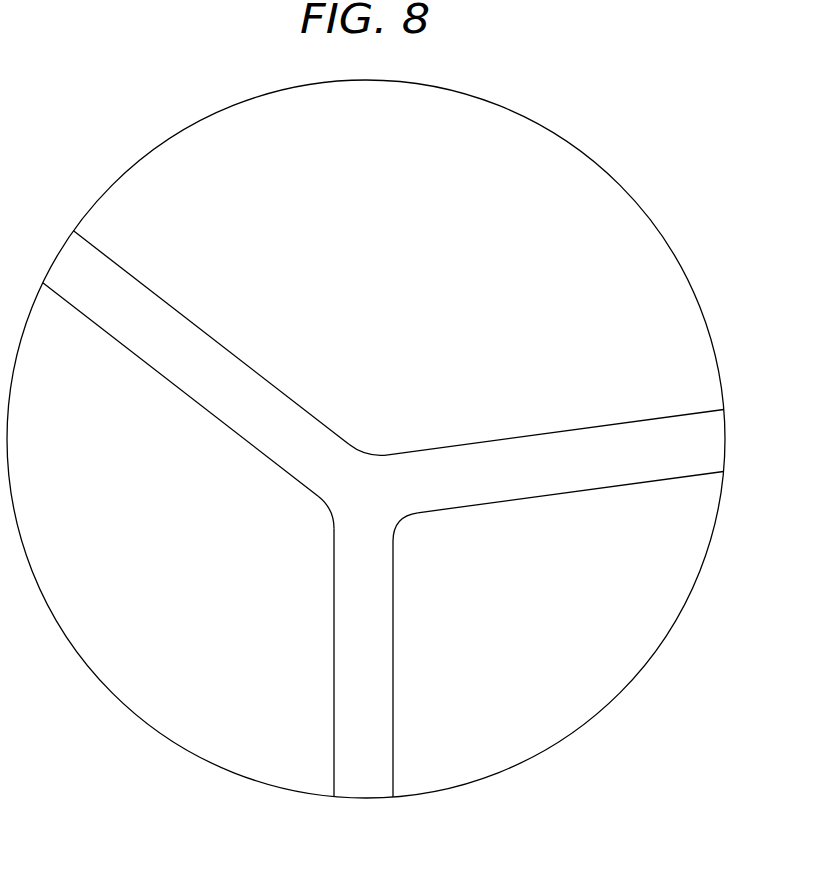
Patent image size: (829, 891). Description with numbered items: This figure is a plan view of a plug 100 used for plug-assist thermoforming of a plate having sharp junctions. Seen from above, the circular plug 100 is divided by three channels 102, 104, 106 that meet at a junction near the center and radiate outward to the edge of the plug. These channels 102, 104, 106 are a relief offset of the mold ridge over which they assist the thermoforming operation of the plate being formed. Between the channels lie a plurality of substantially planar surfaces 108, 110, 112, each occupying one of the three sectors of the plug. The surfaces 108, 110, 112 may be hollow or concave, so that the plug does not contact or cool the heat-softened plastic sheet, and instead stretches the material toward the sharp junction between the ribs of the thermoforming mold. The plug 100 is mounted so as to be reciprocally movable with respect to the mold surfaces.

The plug 100 is at (604, 119).
The channel 102 is at (348, 762).
The channel 104 is at (698, 428).
The channel 106 is at (84, 266).
The substantially planar surface 108 is at (493, 355).
The substantially planar surface 110 is at (237, 576).
The substantially planar surface 112 is at (526, 628).